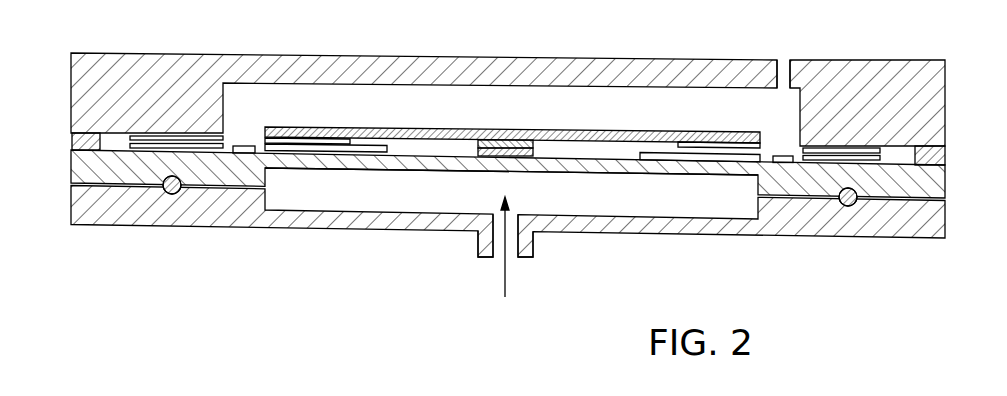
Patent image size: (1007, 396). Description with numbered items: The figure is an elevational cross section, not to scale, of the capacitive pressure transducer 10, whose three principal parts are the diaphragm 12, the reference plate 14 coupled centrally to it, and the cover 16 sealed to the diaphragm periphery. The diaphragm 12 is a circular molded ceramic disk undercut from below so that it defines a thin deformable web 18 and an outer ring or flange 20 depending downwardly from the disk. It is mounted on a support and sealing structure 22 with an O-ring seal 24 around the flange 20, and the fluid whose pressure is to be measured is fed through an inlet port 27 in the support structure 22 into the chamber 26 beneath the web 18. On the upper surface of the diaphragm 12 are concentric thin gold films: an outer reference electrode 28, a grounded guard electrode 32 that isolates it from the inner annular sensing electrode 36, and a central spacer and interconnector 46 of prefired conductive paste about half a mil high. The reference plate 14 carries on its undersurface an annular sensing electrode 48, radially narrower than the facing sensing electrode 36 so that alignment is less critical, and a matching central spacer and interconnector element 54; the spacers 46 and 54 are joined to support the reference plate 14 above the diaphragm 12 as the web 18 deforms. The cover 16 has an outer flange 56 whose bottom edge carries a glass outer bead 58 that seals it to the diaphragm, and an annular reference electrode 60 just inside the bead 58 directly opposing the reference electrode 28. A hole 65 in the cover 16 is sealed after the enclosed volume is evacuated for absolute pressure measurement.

The transducer 10 is at (507, 188).
The diaphragm 12 is at (496, 191).
The reference plate 14 is at (583, 122).
The cover 16 is at (498, 53).
The deformable web 18 is at (417, 153).
The outer ring or flange 20 is at (108, 170).
The support and sealing structure 22 is at (787, 222).
The O-ring seal 24 is at (855, 205).
The chamber or enclosed volume 26 is at (568, 203).
The inlet port 27 is at (478, 242).
The reference electrode 28 is at (121, 143).
The guard electrode 32 is at (250, 145).
The sensing electrode 36 is at (334, 146).
The spacer and interconnector 46 is at (533, 154).
The sensing electrode 48 is at (307, 140).
The spacer and interconnector element 54 is at (478, 143).
The outer flange 56 is at (898, 108).
The glass outer bead 58 is at (946, 156).
The reference electrode 60 is at (172, 136).
The hole 65 is at (782, 70).